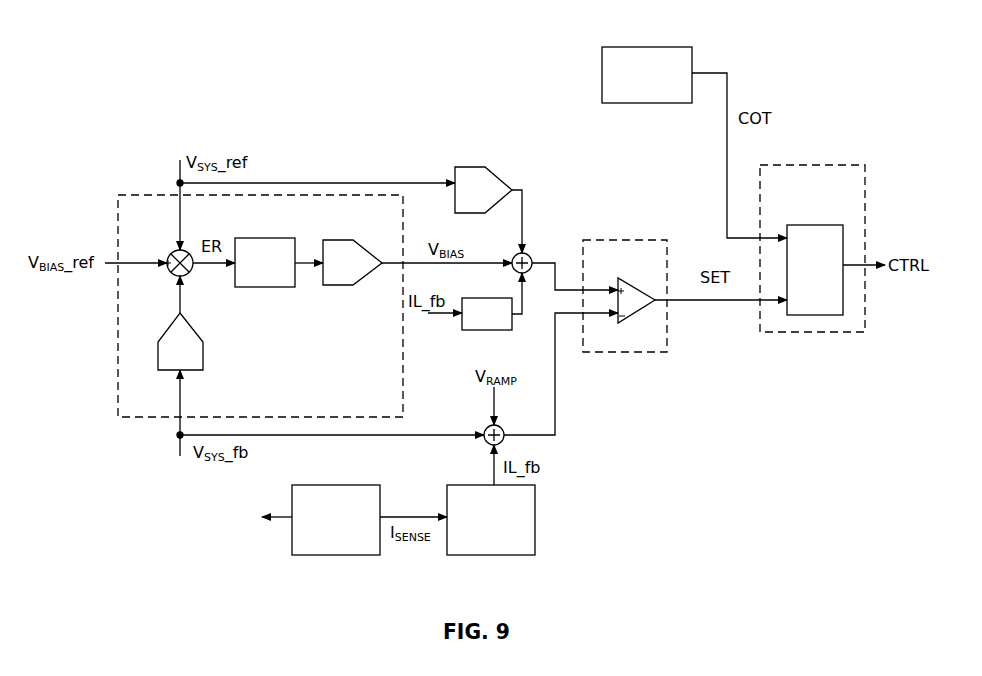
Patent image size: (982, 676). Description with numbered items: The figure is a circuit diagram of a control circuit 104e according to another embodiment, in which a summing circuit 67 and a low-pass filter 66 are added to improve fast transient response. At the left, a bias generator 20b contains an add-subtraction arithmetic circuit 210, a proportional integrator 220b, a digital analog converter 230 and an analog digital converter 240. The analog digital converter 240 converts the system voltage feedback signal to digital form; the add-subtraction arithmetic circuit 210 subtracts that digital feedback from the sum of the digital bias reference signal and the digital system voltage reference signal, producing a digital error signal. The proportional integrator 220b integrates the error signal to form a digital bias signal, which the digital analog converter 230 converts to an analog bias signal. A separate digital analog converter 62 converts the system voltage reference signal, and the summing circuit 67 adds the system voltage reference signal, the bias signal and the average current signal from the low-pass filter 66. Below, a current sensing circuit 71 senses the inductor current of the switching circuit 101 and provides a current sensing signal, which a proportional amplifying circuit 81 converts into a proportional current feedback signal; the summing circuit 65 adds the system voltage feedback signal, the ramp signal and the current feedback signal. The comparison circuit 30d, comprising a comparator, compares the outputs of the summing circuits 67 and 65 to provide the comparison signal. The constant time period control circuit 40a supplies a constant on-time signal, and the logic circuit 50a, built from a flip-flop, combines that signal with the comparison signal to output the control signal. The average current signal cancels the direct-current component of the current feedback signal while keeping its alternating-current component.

The control circuit 104e is at (333, 71).
The bias generator 20b is at (260, 306).
The add-subtraction arithmetic circuit 210 is at (168, 275).
The proportional integrator 220b is at (257, 238).
The digital analog converter (DAC) 230 is at (339, 240).
The analog digital converter (ADC) 240 is at (203, 331).
The DAC 62 is at (512, 186).
The summing circuit 67 is at (531, 256).
The low-pass filter 66 is at (505, 331).
The summing circuit 65 is at (504, 426).
The comparison circuit 30d is at (625, 296).
The constant time period control circuit 40a is at (647, 75).
The logic circuit 50a is at (812, 248).
The current sensing circuit 71 is at (336, 520).
The proportional amplifying circuit 81 is at (491, 520).
The switching circuit 101 is at (191, 516).